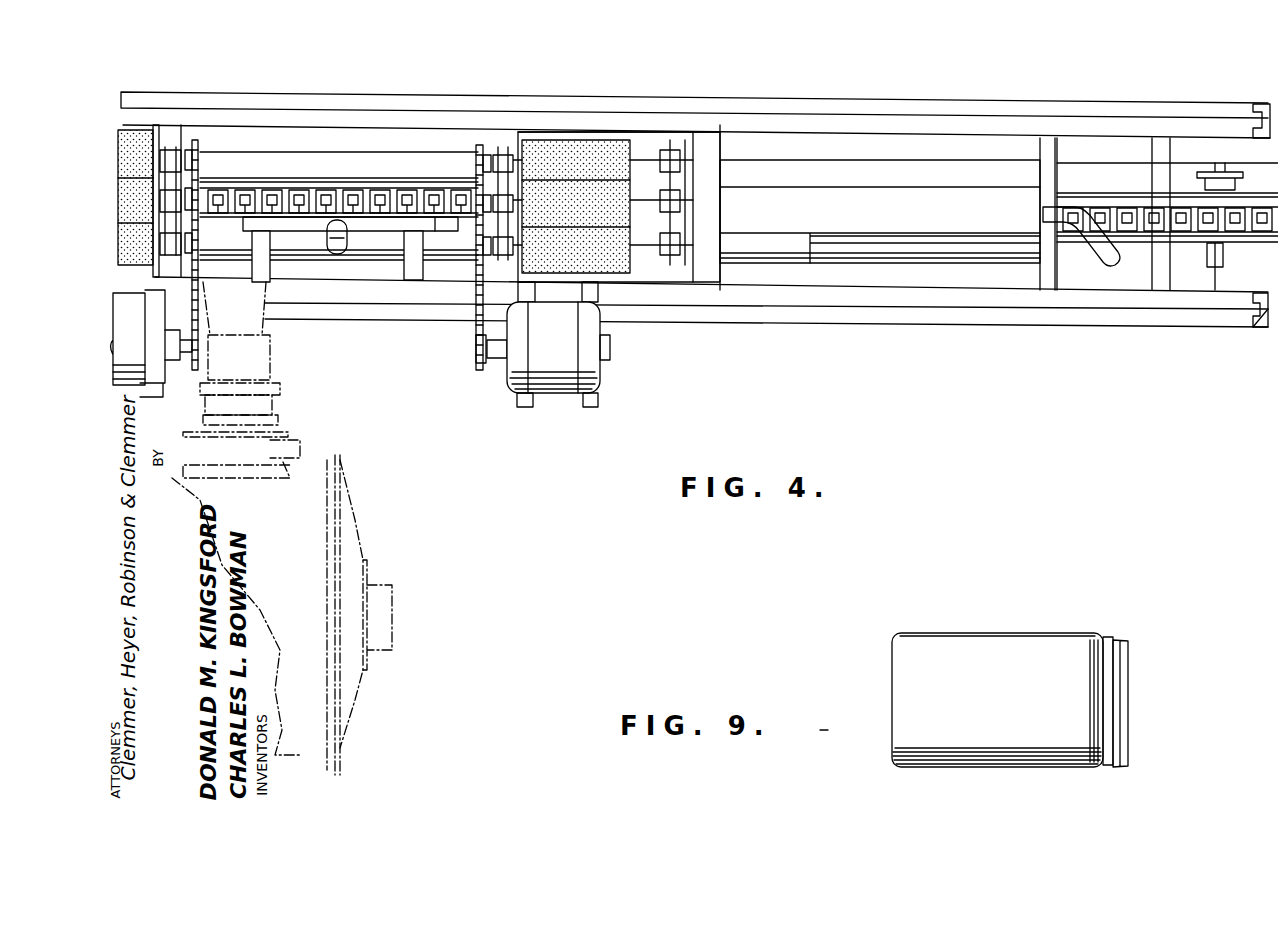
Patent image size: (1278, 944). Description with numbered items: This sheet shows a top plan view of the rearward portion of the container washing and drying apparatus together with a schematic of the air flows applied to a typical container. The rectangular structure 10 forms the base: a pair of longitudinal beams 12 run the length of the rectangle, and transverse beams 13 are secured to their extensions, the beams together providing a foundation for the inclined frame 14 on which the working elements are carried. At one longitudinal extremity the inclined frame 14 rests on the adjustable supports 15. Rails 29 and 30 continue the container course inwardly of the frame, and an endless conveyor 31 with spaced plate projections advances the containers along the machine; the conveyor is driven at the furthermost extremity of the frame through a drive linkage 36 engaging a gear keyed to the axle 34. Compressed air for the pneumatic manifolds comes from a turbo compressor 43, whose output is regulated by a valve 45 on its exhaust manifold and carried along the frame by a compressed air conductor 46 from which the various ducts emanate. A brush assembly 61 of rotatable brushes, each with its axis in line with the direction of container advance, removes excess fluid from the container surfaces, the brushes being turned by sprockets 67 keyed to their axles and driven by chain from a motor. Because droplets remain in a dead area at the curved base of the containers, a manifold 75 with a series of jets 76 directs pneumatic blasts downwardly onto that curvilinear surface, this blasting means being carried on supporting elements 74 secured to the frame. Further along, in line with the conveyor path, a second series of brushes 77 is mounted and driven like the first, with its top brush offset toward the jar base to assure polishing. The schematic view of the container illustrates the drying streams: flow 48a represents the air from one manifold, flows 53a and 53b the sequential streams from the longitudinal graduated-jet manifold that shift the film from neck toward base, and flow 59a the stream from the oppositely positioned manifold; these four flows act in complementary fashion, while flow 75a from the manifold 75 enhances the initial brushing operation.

In FIG. 4, the rectangular structure 10 is at (750, 321).
In FIG. 4, the longitudinal beams 12 is at (1000, 103).
In FIG. 4, the transverse beams 13 is at (1262, 326).
In FIG. 4, the inclined frame 14 is at (381, 125).
In FIG. 4, the adjustable supports 15 is at (1238, 304).
In FIG. 4, the rail 29 is at (455, 195).
In FIG. 4, the rail 30 is at (456, 231).
In FIG. 4, the endless conveyor 31 is at (349, 197).
In FIG. 4, the axle 34 is at (1212, 268).
In FIG. 4, the drive linkage 36 is at (1242, 172).
In FIG. 4, the turbo compressor 43 is at (360, 544).
In FIG. 4, the valve 45 is at (300, 446).
In FIG. 4, the compressed air conductor 46 is at (796, 254).
In FIG. 4, the brush assembly 61 is at (146, 123).
In FIG. 4, the sprockets 67 is at (200, 153).
In FIG. 4, the supporting elements 74 is at (262, 270).
In FIG. 4, the manifold 75 is at (379, 232).
In FIG. 4, the jets 76 is at (318, 231).
In FIG. 4, the second series of brushes 77 is at (642, 134).
In FIG. 9, the flow from manifold 48 48a is at (1086, 627).
In FIG. 9, the flow from manifold 53 53a is at (1136, 530).
In FIG. 9, the flow from manifold 53 53b is at (1133, 530).
In FIG. 9, the flow from manifold 59 59a is at (847, 533).
In FIG. 9, the flow from manifold 75 75a is at (933, 627).